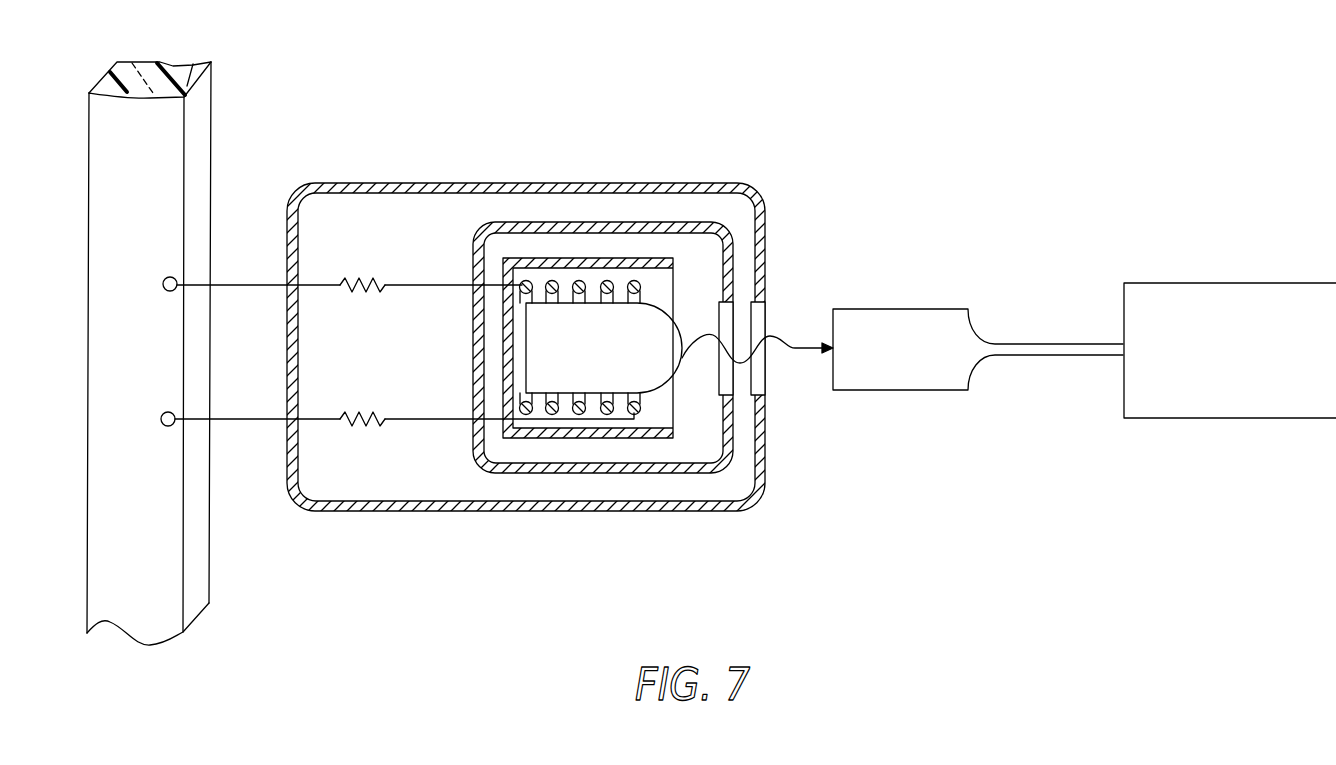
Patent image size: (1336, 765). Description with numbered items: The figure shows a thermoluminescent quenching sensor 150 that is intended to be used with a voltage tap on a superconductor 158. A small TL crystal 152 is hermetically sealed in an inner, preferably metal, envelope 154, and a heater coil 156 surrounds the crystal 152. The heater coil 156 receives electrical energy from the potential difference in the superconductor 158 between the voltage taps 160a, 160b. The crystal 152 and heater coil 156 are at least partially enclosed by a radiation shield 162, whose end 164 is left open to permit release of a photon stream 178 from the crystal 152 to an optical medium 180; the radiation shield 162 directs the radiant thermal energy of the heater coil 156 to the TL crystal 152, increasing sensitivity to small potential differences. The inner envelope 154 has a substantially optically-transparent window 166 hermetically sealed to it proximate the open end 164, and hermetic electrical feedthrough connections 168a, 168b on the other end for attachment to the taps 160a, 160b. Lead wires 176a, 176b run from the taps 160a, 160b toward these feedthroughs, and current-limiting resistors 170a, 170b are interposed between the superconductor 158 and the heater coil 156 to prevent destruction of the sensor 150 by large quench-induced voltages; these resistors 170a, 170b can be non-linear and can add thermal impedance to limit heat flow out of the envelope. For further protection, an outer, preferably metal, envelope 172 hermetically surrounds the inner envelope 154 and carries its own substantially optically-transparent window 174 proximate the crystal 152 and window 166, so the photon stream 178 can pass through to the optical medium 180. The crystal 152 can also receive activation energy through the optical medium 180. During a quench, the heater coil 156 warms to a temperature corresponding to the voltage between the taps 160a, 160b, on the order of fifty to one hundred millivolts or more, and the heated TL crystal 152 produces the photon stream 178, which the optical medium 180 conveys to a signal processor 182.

The quenching sensor 150 is at (553, 315).
The TL crystal 152 is at (677, 328).
The inner envelope 154 is at (666, 226).
The heater coil 156 is at (604, 270).
The superconductor 158 is at (98, 350).
The voltage tap 160a is at (165, 277).
The voltage tap 160b is at (165, 427).
The radiation shield 162 is at (608, 348).
The open end 164 is at (665, 399).
The window 166 is at (734, 304).
The hermetic electrical feedthrough connection 168a is at (472, 285).
The hermetic electrical feedthrough connection 168b is at (472, 421).
The current-limiting resistor 170a is at (362, 292).
The current-limiting resistor 170b is at (365, 412).
The outer envelope 172 is at (760, 461).
The window 174 is at (759, 385).
The first lead wire 176a is at (318, 282).
The second lead wire 176b is at (316, 423).
The photon stream 178 is at (780, 337).
The optical medium 180 is at (918, 309).
The signal processor 182 is at (1236, 282).